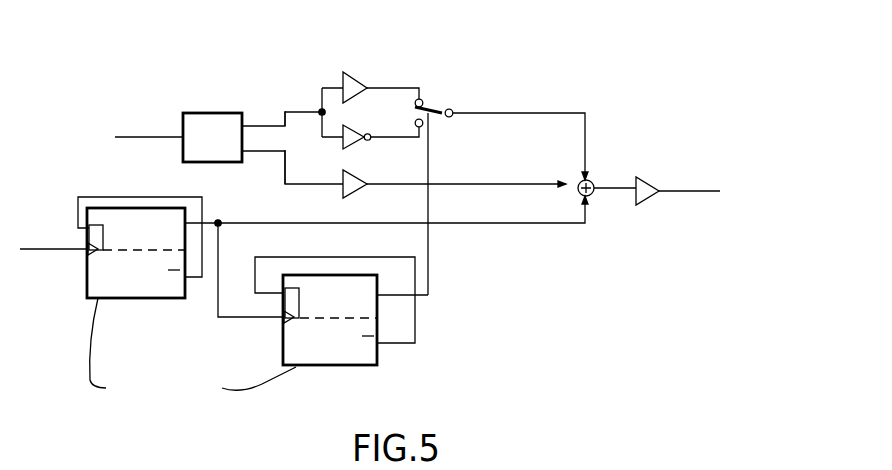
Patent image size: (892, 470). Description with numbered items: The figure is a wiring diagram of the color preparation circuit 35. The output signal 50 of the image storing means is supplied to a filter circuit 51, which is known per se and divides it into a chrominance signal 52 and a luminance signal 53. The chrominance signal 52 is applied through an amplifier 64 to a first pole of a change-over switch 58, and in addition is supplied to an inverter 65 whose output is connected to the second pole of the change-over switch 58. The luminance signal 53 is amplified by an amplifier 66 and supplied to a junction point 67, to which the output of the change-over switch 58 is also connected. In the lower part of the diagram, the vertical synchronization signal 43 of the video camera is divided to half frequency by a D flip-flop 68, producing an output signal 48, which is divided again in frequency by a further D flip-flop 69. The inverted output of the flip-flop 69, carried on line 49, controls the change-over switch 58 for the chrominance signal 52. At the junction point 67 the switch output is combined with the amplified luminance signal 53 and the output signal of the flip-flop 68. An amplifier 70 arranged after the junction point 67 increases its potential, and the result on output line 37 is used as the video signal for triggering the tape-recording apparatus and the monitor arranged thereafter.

The color preparation circuit 35 is at (175, 98).
The output signal 50 is at (128, 136).
The filter circuit 51 is at (226, 112).
The chrominance signal 52 is at (268, 125).
The luminance signal 53 is at (262, 160).
The amplifier 64 is at (362, 80).
The inverter 65 is at (362, 133).
The amplifier 66 is at (364, 188).
The change-over switch 58 is at (435, 105).
The junction point 67 is at (600, 176).
The amplifier 70 is at (652, 176).
The output line 37 is at (698, 182).
The vertical synchronization signal 43 is at (41, 248).
The D flip-flop 68 is at (110, 298).
The output signal 48 is at (243, 320).
The connecting line 49 is at (428, 267).
The D flip-flop 69 is at (342, 365).